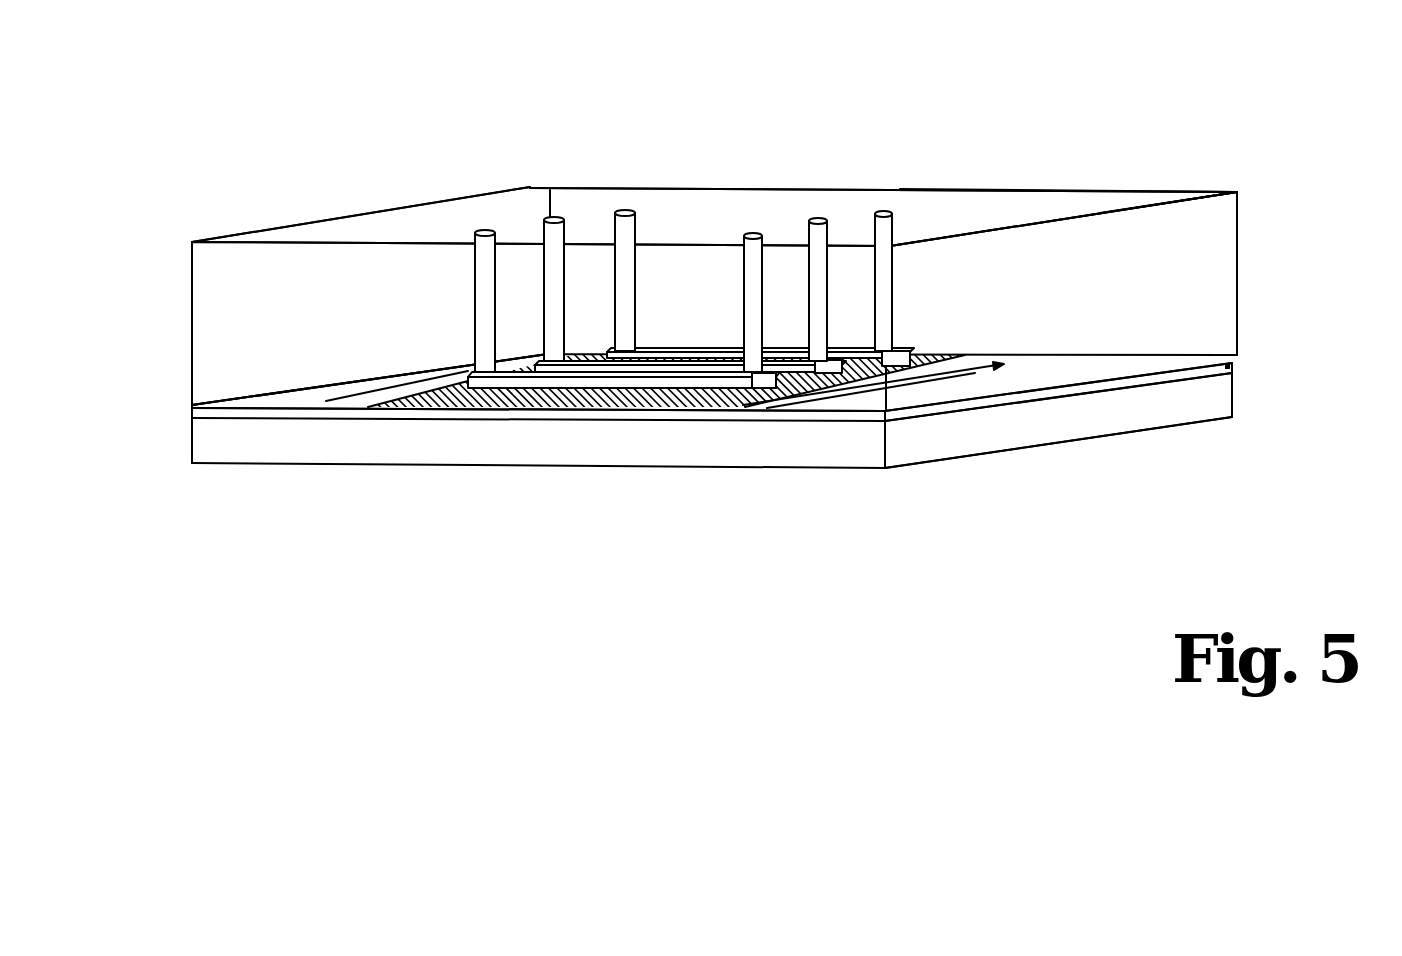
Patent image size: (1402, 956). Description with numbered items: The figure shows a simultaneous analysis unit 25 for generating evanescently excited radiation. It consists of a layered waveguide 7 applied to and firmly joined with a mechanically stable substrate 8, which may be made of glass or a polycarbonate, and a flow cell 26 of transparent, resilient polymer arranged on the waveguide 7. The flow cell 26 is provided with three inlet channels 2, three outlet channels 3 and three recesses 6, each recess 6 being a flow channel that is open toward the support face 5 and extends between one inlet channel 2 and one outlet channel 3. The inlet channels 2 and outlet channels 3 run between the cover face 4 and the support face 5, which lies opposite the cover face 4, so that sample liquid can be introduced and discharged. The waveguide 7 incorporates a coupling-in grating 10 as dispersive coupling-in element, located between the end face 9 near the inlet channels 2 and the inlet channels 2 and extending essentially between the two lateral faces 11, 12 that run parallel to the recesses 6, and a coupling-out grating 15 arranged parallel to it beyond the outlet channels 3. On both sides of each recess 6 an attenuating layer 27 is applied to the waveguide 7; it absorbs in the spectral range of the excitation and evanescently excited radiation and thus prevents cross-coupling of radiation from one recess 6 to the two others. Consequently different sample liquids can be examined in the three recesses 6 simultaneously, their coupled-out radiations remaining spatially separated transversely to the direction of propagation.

The inlet channel 2 is at (608, 227).
The outlet channel 3 is at (894, 234).
The cover face 4 is at (707, 220).
The support face 5 is at (1067, 374).
The recess 6 is at (688, 358).
The waveguide 7 is at (1230, 367).
The substrate 8 is at (1214, 398).
The end face 9 is at (183, 280).
The coupling-in grating 10 is at (360, 387).
The lateral face 11 is at (262, 320).
The lateral face 12 is at (1031, 184).
The coupling-out grating 15 is at (943, 390).
The simultaneous analysis unit 25 is at (1194, 172).
The flow cell 26 is at (1215, 243).
The attenuating layer 27 is at (493, 410).